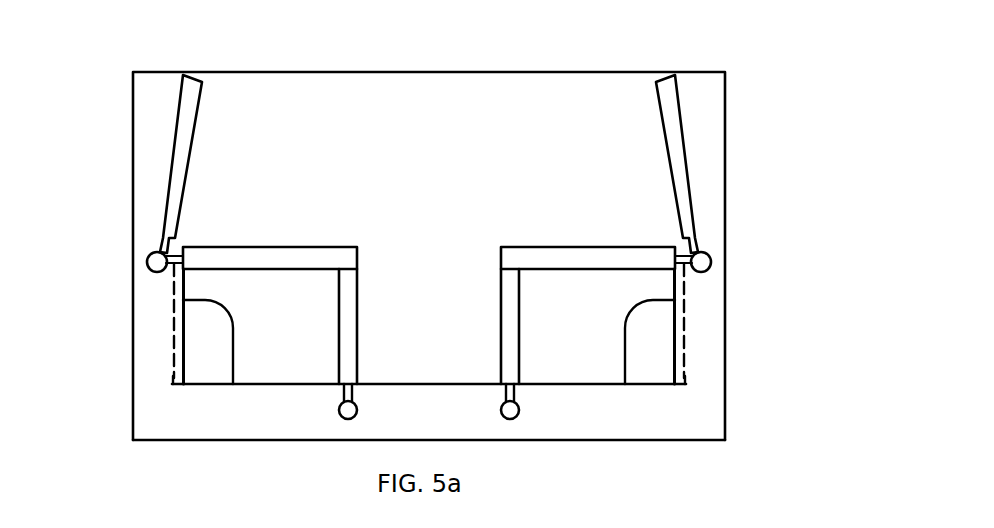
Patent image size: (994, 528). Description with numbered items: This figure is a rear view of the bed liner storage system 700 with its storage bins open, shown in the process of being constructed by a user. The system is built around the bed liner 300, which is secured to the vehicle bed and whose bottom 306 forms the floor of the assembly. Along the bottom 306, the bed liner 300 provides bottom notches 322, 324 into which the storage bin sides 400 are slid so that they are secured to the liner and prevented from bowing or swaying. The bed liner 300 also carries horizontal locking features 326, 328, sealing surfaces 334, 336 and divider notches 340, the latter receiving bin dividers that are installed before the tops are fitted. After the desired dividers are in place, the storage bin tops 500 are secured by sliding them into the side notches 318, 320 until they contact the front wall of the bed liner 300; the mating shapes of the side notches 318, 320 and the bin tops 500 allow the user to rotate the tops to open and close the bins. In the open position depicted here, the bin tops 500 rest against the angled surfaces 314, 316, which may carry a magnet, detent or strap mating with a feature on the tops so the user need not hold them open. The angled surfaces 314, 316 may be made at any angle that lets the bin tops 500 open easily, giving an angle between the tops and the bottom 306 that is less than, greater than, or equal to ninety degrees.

The bed liner storage system 700 is at (553, 38).
The bed liner 300 is at (252, 72).
The bottom 306 is at (672, 428).
The storage bin tops 500 is at (200, 100).
The angled surface 316 is at (175, 153).
The angled surface 314 is at (683, 128).
The side notch 320 is at (147, 258).
The side notch 318 is at (710, 252).
The horizontal locking feature 328 is at (293, 246).
The horizontal locking feature 326 is at (535, 246).
The sealing surface 336 is at (172, 278).
The sealing surface 334 is at (687, 268).
The divider notches 340 is at (170, 355).
The storage bin sides 400 is at (352, 318).
The bottom notch 324 is at (337, 414).
The bottom notch 322 is at (520, 410).